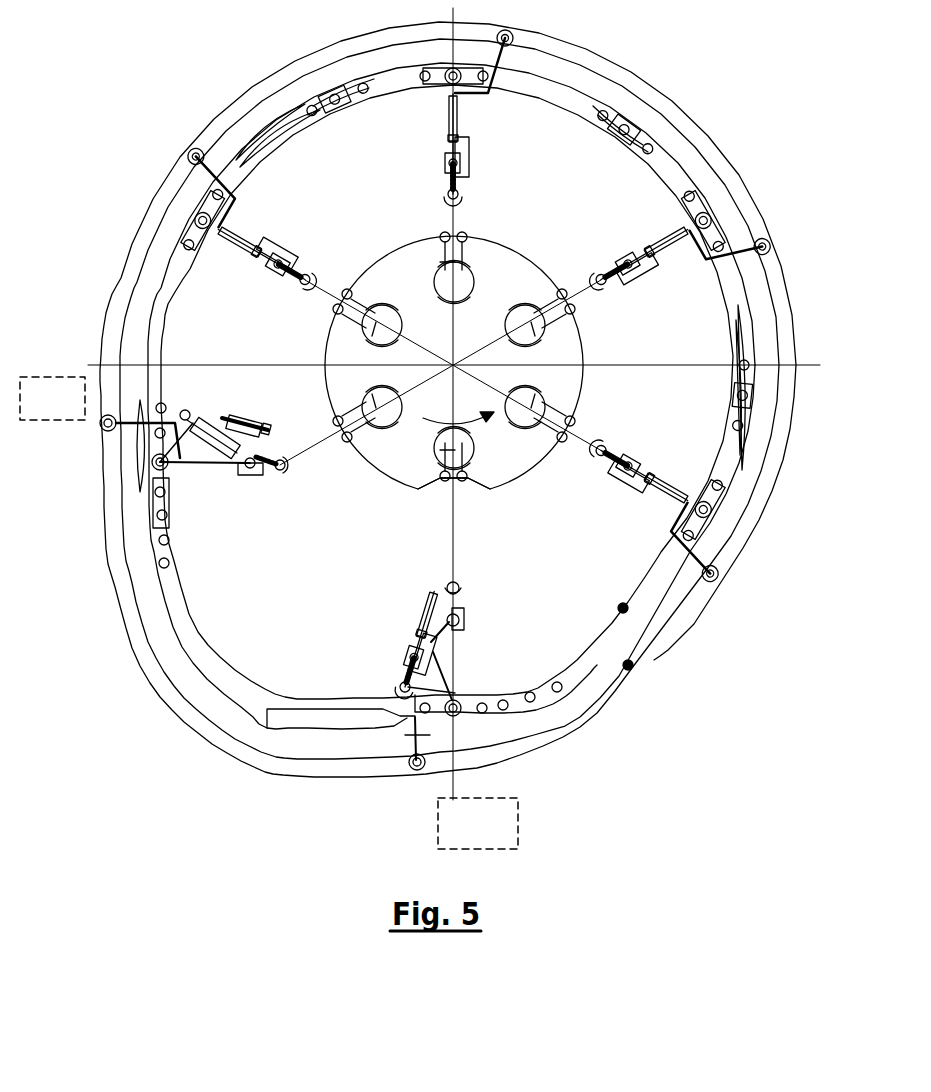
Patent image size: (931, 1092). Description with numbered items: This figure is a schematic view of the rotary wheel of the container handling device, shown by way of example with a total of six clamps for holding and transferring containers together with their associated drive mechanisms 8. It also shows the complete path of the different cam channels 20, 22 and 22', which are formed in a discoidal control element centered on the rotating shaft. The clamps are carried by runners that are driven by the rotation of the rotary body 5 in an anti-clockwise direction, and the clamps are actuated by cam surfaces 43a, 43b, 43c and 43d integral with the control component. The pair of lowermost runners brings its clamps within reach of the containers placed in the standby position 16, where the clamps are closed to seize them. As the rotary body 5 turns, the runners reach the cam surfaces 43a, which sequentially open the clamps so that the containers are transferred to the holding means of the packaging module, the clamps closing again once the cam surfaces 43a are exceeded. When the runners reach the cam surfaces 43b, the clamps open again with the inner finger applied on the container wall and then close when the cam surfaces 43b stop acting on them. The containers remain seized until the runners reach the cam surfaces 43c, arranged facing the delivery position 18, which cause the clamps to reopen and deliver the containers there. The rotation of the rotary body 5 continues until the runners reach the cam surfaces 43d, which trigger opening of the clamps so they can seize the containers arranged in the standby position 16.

The rotary body 5 is at (434, 340).
The drive mechanisms 8 is at (472, 158).
The standby position 16 is at (478, 823).
The delivery position 18 is at (52, 398).
The cam channel 20 is at (375, 470).
The cam channel 22 is at (668, 651).
The cam channel 22' is at (655, 707).
The cam surfaces 43a is at (750, 345).
The cam surfaces 43b is at (268, 122).
The cam surfaces 43c is at (158, 440).
The cam surfaces 43d is at (259, 708).